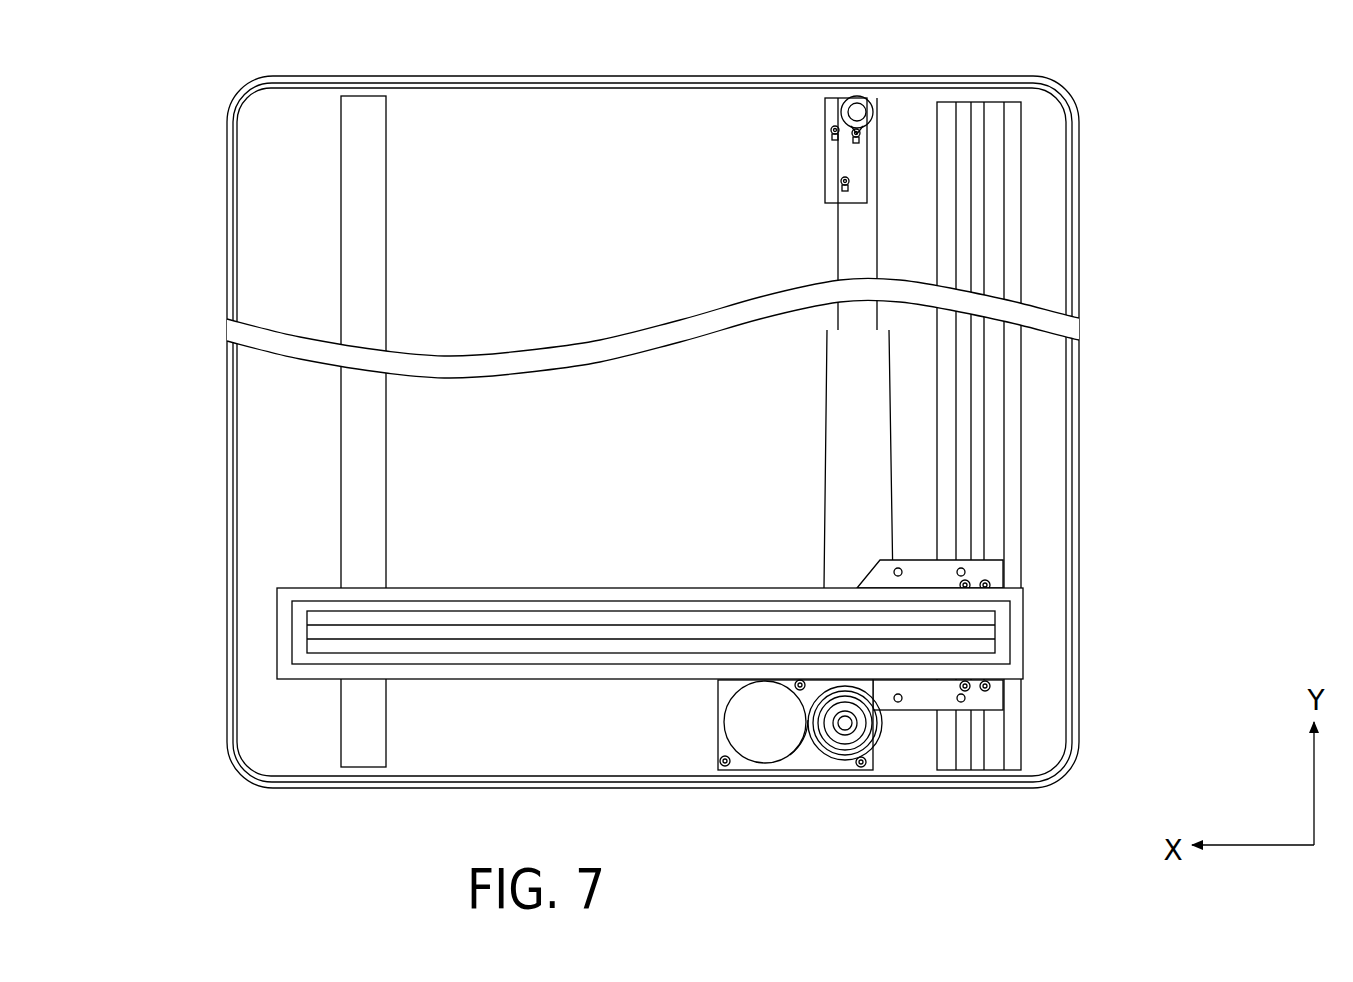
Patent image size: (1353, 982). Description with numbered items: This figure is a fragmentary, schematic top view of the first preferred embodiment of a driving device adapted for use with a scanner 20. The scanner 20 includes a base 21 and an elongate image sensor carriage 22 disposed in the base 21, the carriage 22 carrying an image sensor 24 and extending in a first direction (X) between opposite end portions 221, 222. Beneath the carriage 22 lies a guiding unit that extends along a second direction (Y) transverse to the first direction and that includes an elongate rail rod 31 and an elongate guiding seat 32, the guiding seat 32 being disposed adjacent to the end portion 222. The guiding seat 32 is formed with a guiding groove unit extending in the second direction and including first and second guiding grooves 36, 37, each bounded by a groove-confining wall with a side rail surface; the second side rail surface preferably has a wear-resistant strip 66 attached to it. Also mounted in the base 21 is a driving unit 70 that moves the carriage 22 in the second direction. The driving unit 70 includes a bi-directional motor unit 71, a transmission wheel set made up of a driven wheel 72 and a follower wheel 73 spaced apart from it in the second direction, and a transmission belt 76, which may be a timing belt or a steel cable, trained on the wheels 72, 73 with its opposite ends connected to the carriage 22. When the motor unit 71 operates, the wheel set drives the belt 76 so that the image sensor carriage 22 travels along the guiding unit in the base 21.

The scanner 20 is at (222, 436).
The base 21 is at (233, 394).
The image sensor carriage 22 is at (725, 708).
The end portion 221 is at (308, 668).
The end portion 222 is at (1018, 611).
The image sensor 24 is at (433, 656).
The rail rod 31 is at (345, 557).
The guiding seat 32 is at (1020, 710).
The first guiding groove 36 is at (963, 770).
The second guiding groove 37 is at (995, 757).
The wear-resistant strip 66 is at (1006, 414).
The driving unit 70 is at (804, 788).
The bi-directional motor unit 71 is at (777, 748).
The driven wheel 72 is at (847, 748).
The follower wheel 73 is at (859, 97).
The transmission belt 76 is at (838, 233).